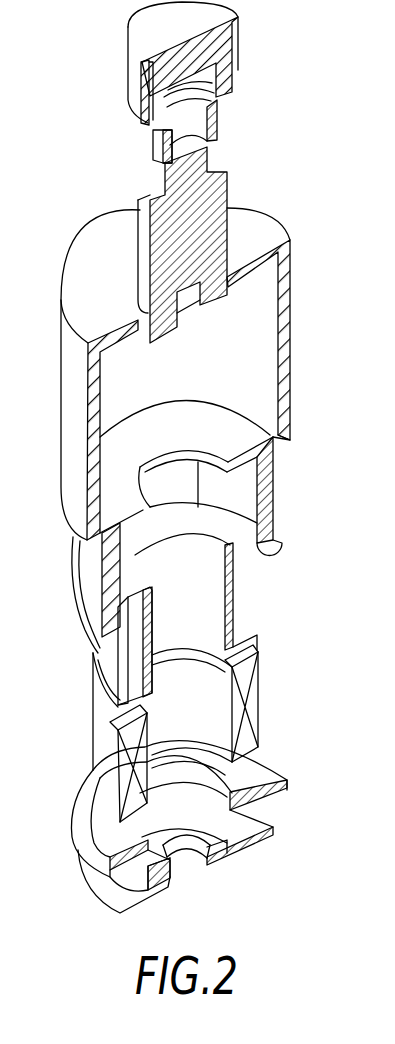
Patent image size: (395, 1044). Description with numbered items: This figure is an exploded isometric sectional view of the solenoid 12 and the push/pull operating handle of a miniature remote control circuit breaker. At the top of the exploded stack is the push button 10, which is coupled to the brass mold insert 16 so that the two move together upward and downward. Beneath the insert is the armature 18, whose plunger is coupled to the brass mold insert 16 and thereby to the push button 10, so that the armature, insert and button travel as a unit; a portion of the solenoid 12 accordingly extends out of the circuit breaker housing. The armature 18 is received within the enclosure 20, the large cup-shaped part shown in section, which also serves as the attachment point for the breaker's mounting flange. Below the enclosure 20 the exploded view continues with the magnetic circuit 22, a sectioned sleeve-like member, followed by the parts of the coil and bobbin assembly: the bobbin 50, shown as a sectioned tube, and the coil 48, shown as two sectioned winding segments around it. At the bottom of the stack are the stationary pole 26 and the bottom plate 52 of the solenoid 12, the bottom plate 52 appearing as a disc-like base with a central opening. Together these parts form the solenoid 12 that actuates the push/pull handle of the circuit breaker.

The push button 10 is at (220, 37).
The solenoid 12 is at (61, 135).
The brass mold insert 16 is at (197, 123).
The armature 18 is at (217, 293).
The enclosure 20 is at (80, 272).
The magnetic circuit 22 is at (267, 490).
The stationary pole 26 is at (278, 797).
The coil 48 is at (250, 703).
The bobbin 50 is at (233, 590).
The bottom plate 52 is at (222, 862).